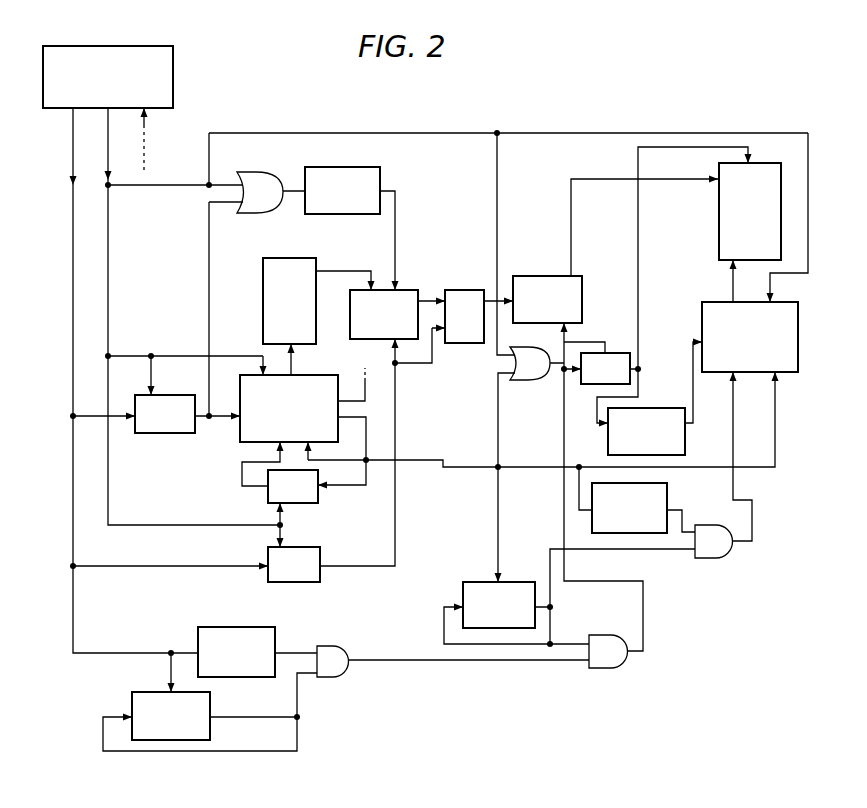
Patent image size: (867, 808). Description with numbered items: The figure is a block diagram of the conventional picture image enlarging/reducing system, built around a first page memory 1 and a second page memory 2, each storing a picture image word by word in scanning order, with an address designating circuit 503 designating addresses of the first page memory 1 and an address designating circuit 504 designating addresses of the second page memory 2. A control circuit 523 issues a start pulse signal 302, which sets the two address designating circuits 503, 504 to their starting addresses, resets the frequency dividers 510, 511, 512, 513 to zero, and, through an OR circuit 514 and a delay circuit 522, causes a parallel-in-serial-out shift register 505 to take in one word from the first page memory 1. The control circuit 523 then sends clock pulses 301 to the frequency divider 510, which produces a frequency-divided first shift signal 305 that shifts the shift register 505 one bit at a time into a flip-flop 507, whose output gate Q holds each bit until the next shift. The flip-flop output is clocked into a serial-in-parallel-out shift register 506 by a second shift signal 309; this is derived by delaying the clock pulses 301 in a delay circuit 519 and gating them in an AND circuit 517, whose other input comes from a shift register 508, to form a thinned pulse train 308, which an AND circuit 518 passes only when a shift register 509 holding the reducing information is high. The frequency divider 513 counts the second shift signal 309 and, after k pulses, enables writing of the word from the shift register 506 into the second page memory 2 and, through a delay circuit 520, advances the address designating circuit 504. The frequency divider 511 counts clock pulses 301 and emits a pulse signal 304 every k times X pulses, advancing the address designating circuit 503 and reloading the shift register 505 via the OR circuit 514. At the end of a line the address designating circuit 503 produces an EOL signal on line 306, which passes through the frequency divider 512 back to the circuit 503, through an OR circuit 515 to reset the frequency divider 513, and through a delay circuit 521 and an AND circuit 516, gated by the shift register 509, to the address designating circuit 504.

The first page memory 1 is at (290, 258).
The second page memory 2 is at (775, 163).
The clock pulses 301 is at (74, 132).
The start pulse signal 302 is at (109, 225).
The pulse signal 304 is at (210, 428).
The first shift signal 305 is at (396, 490).
The signal line 306 is at (436, 460).
The pulse train 308 is at (448, 661).
The second shift signal 309 is at (644, 622).
The address designating circuit 503 is at (328, 375).
The address designating circuit 504 is at (712, 302).
The shift register 505 is at (410, 290).
The shift register 506 is at (548, 276).
The flip-flop 507 is at (466, 290).
The shift register 508 is at (155, 692).
The shift register 509 is at (470, 582).
The frequency divider 510 is at (307, 582).
The frequency divider 511 is at (160, 433).
The frequency divider 512 is at (305, 503).
The frequency divider 513 is at (618, 353).
The OR circuit 514 is at (268, 161).
The OR circuit 515 is at (525, 380).
The AND circuit 516 is at (713, 558).
The AND circuit 517 is at (343, 677).
The AND circuit 518 is at (620, 668).
The delay circuit 519 is at (238, 627).
The delay circuit 520 is at (655, 408).
The delay circuit 521 is at (667, 490).
The delay circuit 522 is at (345, 167).
The control circuit 523 is at (174, 76).